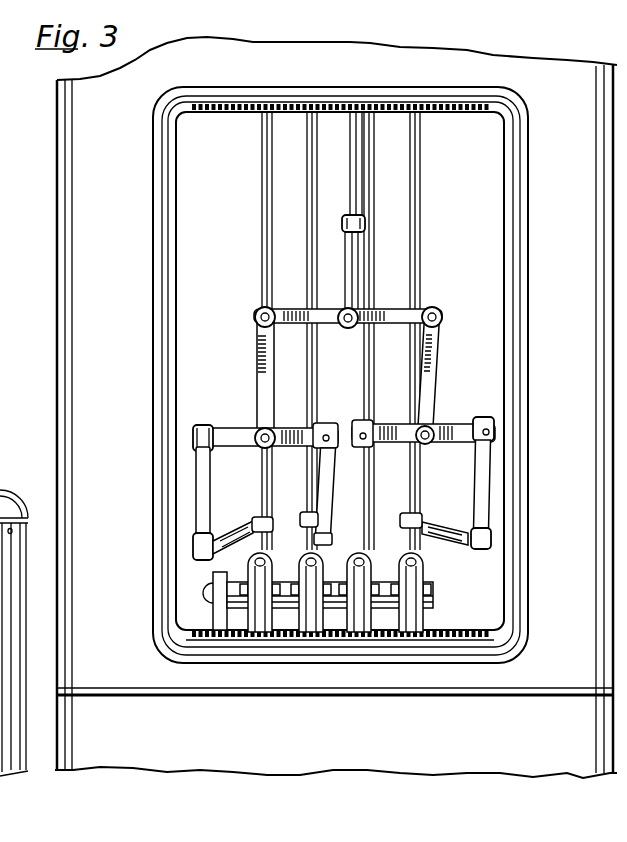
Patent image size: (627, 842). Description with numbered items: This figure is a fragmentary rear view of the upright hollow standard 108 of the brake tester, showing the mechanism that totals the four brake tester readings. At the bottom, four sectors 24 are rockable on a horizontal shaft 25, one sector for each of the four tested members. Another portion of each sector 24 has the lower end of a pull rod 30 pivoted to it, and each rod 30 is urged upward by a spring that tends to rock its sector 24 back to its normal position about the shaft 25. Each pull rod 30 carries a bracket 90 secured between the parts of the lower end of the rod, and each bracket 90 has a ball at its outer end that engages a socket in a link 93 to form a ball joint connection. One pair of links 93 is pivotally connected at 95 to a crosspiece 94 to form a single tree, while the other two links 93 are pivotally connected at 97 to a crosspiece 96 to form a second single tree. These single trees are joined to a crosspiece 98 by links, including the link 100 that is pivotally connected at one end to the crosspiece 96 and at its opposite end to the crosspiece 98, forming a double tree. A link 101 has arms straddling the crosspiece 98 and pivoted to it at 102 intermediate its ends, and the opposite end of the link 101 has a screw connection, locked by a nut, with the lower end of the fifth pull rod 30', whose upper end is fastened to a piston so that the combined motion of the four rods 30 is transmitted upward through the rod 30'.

The hollow standard 108 is at (70, 343).
The pull rod 30 is at (348, 331).
The fifth pull rod 30' is at (373, 211).
The link 101 is at (352, 267).
The pivot 102 is at (348, 329).
The crosspiece 98 is at (297, 323).
The link 100 is at (430, 345).
The crosspiece 94 is at (239, 427).
The pivot connection 95 is at (201, 424).
The crosspiece 96 is at (448, 422).
The pivot connection 97 is at (494, 430).
The link 93 is at (210, 476).
The bracket 90 is at (196, 545).
The horizontal shaft 25 is at (208, 597).
The sector 24 is at (308, 630).